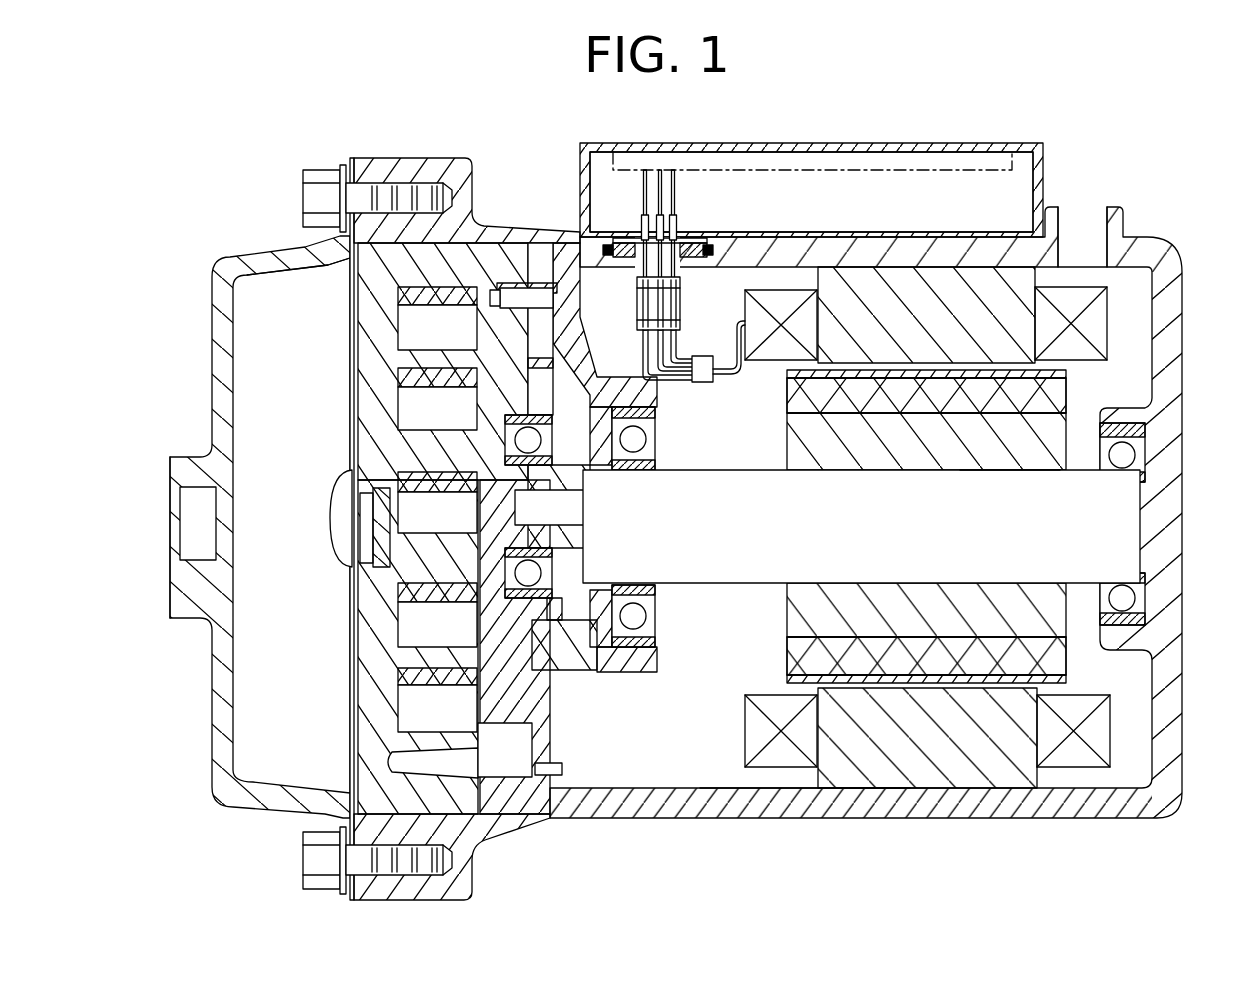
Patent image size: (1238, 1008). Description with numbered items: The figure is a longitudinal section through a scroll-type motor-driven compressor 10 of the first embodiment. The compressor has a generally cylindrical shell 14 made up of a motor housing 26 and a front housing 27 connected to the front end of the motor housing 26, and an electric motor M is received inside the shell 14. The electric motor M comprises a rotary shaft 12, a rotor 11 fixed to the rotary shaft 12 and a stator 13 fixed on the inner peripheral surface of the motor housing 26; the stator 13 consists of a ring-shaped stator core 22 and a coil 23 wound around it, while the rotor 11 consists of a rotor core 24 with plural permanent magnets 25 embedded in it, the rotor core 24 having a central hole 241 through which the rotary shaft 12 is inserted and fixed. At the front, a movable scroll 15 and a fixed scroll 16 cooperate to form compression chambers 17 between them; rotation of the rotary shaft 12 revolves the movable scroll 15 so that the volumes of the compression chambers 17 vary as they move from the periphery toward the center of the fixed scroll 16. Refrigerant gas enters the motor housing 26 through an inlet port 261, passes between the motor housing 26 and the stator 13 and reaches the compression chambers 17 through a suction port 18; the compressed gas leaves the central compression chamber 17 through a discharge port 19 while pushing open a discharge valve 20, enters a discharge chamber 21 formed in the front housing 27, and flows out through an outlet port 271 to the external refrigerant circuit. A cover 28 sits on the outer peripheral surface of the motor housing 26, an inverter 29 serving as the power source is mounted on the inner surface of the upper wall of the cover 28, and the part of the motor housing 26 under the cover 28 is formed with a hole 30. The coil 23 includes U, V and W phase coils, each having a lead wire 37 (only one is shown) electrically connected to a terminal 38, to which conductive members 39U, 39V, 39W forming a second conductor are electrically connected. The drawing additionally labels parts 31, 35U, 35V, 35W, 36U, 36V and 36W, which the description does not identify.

The motor-driven compressor 10 is at (252, 175).
The rotor 11 is at (878, 526).
The rotary shaft 12 is at (755, 470).
The stator 13 is at (909, 579).
The shell 14 is at (645, 820).
The movable scroll 15 is at (528, 643).
The fixed scroll 16 is at (357, 353).
The compression chambers 17 is at (421, 340).
The suction port 18 is at (553, 765).
The discharge port 19 is at (380, 540).
The discharge valve 20 is at (352, 520).
The discharge chamber 21 is at (278, 681).
The stator core 22 is at (1013, 788).
The coil 23 is at (1080, 768).
The rotor core 24 is at (788, 610).
The permanent magnets 25 is at (790, 393).
The motor housing 26 is at (740, 820).
The front housing 27 is at (266, 258).
The cover 28 is at (580, 165).
The inverter 29 is at (811, 193).
The hole 30 is at (681, 288).
The sealing member 31 is at (712, 252).
The U-phase terminal 35U is at (641, 228).
The V-phase terminal 35V is at (664, 228).
The W-phase terminal 35W is at (677, 232).
The U-phase conductive pin 36U is at (645, 200).
The V-phase conductive pin 36V is at (662, 190).
The W-phase conductive pin 36W is at (675, 200).
The lead wire 37 is at (733, 350).
The terminal 38 is at (713, 378).
The conductive member 39U is at (641, 355).
The conductive member 39V is at (661, 372).
The conductive member 39W is at (675, 372).
The central hole 241 is at (1012, 472).
The inlet port 261 is at (1090, 207).
The outlet port 271 is at (180, 565).
The electric motor M is at (878, 796).